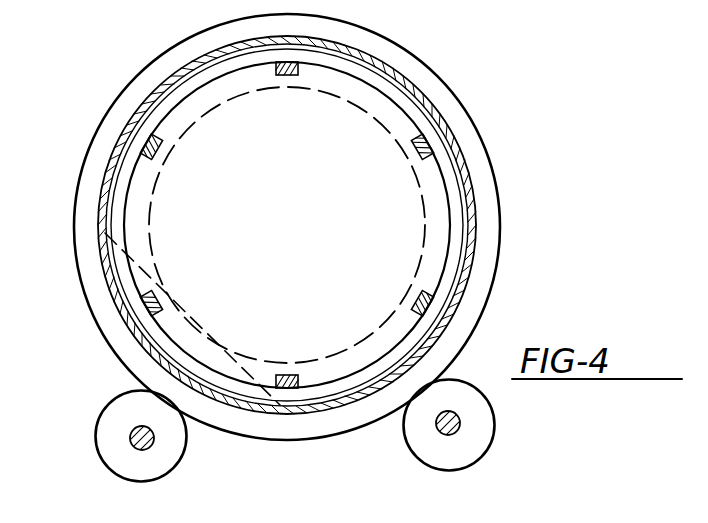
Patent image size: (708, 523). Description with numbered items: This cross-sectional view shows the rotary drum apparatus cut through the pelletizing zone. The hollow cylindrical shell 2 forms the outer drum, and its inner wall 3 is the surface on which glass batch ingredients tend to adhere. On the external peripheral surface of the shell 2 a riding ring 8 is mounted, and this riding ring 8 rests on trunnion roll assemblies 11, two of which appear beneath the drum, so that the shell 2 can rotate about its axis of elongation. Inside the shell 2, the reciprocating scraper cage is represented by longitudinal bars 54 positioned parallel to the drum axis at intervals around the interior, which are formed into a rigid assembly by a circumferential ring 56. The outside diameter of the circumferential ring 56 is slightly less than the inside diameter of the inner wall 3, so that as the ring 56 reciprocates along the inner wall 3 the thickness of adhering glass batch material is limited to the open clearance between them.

The hollow cylindrical shell 2 is at (397, 72).
The inner wall 3 is at (427, 103).
The riding rings 8 is at (85, 188).
The trunnion roll assemblies 11 is at (463, 460).
The longitudinal bars 54 is at (423, 148).
The circumferential rings 56 is at (153, 125).